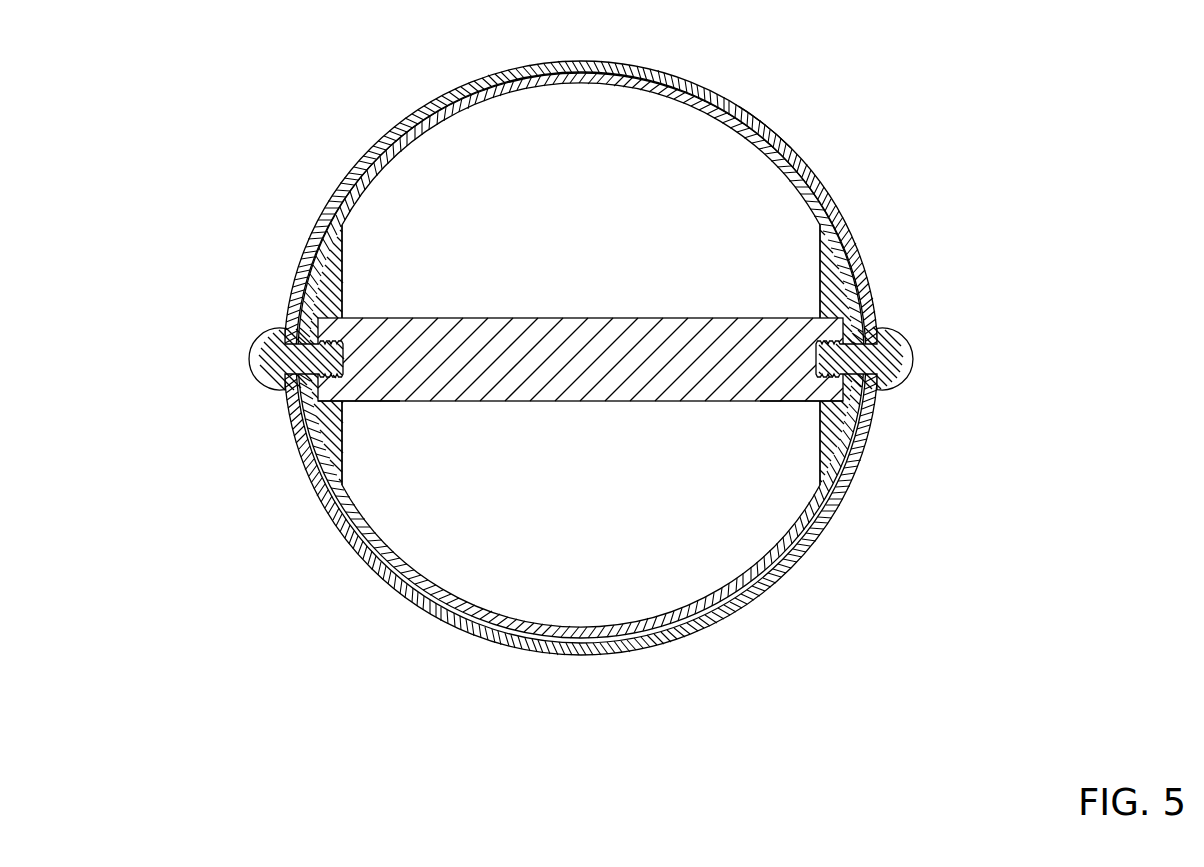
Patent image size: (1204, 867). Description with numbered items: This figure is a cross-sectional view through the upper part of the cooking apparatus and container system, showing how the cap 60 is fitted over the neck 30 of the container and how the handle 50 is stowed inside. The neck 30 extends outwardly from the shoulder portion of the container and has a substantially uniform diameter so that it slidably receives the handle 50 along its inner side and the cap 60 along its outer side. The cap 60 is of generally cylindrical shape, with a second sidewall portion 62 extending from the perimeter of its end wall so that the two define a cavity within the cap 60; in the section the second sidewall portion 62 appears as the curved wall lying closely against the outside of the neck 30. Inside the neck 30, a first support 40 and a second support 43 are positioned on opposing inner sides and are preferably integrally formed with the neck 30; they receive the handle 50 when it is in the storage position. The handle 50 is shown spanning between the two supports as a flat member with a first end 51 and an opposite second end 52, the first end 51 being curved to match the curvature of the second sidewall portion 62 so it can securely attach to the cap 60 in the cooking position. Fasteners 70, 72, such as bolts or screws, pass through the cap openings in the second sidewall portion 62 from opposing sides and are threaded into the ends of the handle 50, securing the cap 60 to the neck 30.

The cap 60 is at (408, 98).
The second sidewall portion 62 is at (767, 124).
The neck 30 is at (708, 113).
The second support 43 is at (342, 270).
The first support 40 is at (819, 274).
The handle 50 is at (583, 410).
The first end 51 is at (800, 401).
The second end 52 is at (370, 401).
The fastener 70 is at (902, 348).
The fastener 72 is at (260, 356).